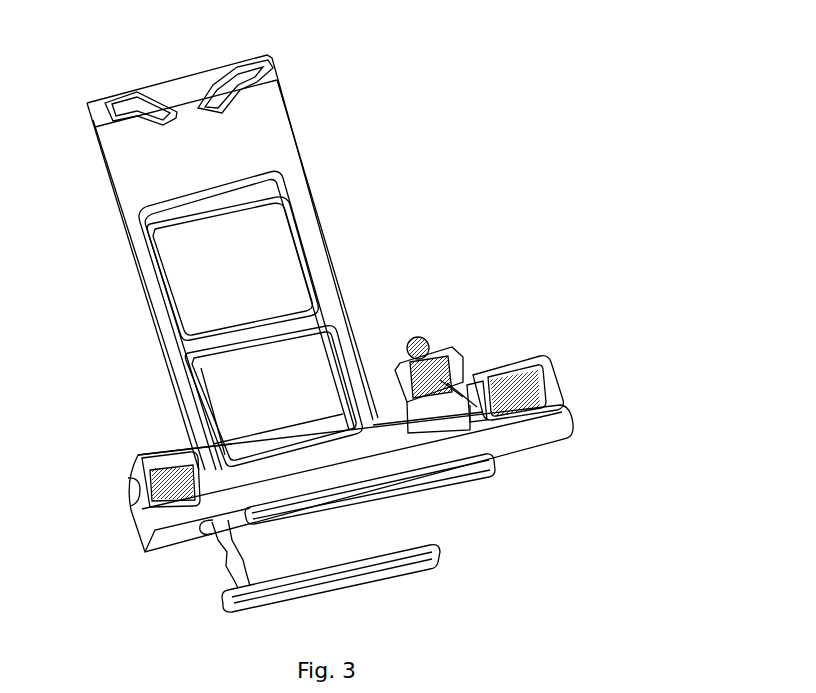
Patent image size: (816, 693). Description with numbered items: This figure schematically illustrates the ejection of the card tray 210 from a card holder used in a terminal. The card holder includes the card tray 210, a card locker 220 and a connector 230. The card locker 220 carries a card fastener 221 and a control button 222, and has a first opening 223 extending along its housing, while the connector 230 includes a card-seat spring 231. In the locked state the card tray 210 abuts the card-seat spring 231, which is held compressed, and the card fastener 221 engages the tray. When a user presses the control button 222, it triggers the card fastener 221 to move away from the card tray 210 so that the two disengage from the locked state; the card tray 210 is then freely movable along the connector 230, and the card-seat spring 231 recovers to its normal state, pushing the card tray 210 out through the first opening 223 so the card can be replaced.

The card tray 210 is at (140, 245).
The card locker 220 is at (550, 443).
The card fastener 221 is at (380, 428).
The control button 222 is at (470, 460).
The first opening 223 is at (405, 478).
The connector 230 is at (297, 172).
The card-seat spring 231 is at (217, 103).